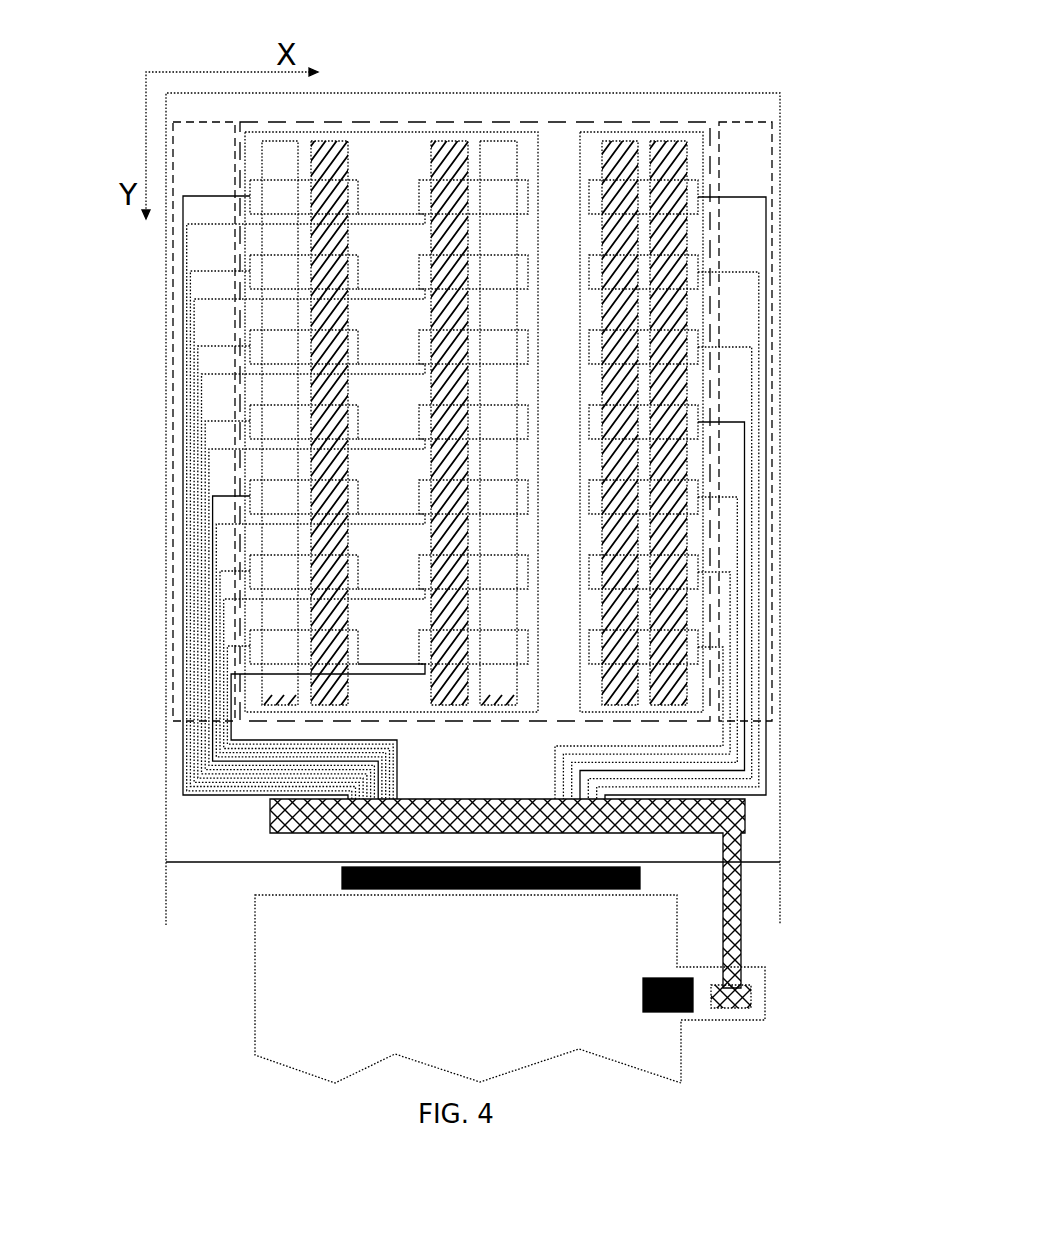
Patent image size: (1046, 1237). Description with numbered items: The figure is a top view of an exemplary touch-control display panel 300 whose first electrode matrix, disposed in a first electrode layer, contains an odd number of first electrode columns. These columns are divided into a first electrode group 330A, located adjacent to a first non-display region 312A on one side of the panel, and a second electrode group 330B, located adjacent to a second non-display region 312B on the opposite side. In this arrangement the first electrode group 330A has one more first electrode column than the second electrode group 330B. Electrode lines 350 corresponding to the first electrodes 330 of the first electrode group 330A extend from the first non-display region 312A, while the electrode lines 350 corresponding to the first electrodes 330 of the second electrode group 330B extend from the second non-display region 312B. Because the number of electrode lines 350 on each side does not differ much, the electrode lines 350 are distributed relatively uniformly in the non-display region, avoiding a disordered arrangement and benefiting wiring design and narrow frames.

The touch-control display panel 300 is at (198, 45).
The first non-display region 312A is at (190, 167).
The second non-display region 312B is at (743, 167).
The first electrodes 330 is at (533, 148).
The first electrode group 330A is at (345, 133).
The second electrode group 330B is at (660, 130).
The electrode lines 350 is at (181, 295).